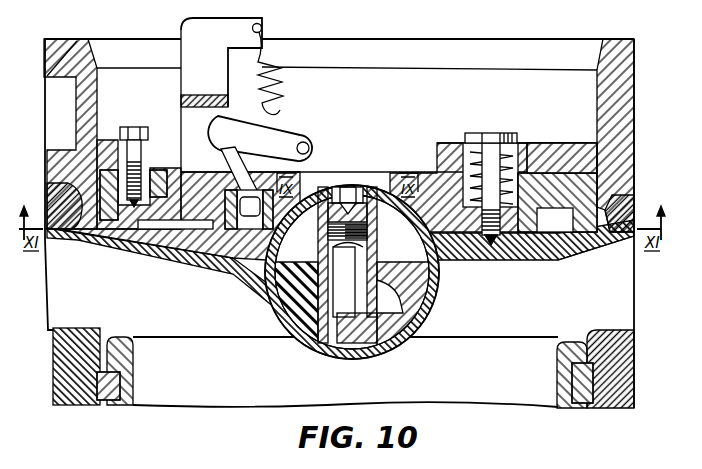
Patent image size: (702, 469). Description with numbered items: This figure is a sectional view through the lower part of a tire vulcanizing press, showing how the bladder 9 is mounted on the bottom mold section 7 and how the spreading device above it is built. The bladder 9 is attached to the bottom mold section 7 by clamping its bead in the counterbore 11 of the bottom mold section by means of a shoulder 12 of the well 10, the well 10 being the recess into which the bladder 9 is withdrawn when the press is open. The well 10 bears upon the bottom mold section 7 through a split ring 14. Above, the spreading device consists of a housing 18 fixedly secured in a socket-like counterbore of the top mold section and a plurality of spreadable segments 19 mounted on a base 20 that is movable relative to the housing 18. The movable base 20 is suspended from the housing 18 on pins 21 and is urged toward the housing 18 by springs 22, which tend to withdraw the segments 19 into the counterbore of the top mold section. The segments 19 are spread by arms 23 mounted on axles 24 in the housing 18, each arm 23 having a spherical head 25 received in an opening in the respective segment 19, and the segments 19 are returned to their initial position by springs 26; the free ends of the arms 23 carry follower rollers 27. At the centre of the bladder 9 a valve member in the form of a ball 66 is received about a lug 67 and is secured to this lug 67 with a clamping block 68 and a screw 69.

The bottom mold section 7 is at (603, 393).
The bladder 9 is at (455, 283).
The well 10 is at (122, 407).
The counterbore 11 is at (55, 403).
The shoulder 12 is at (558, 367).
The split ring 14 is at (97, 402).
The housing 18 is at (563, 173).
The spreadable segments 19 is at (181, 218).
The base 20 is at (563, 273).
The pins 21 is at (477, 141).
The springs 22 is at (503, 147).
The arms 23 is at (287, 131).
The axles 24 is at (222, 139).
The spherical head 25 is at (238, 199).
The springs 26 is at (268, 63).
The follower rollers 27 is at (318, 140).
The ball 66 is at (297, 292).
The lug 67 is at (378, 302).
The clamping block 68 is at (340, 274).
The screw 69 is at (354, 189).